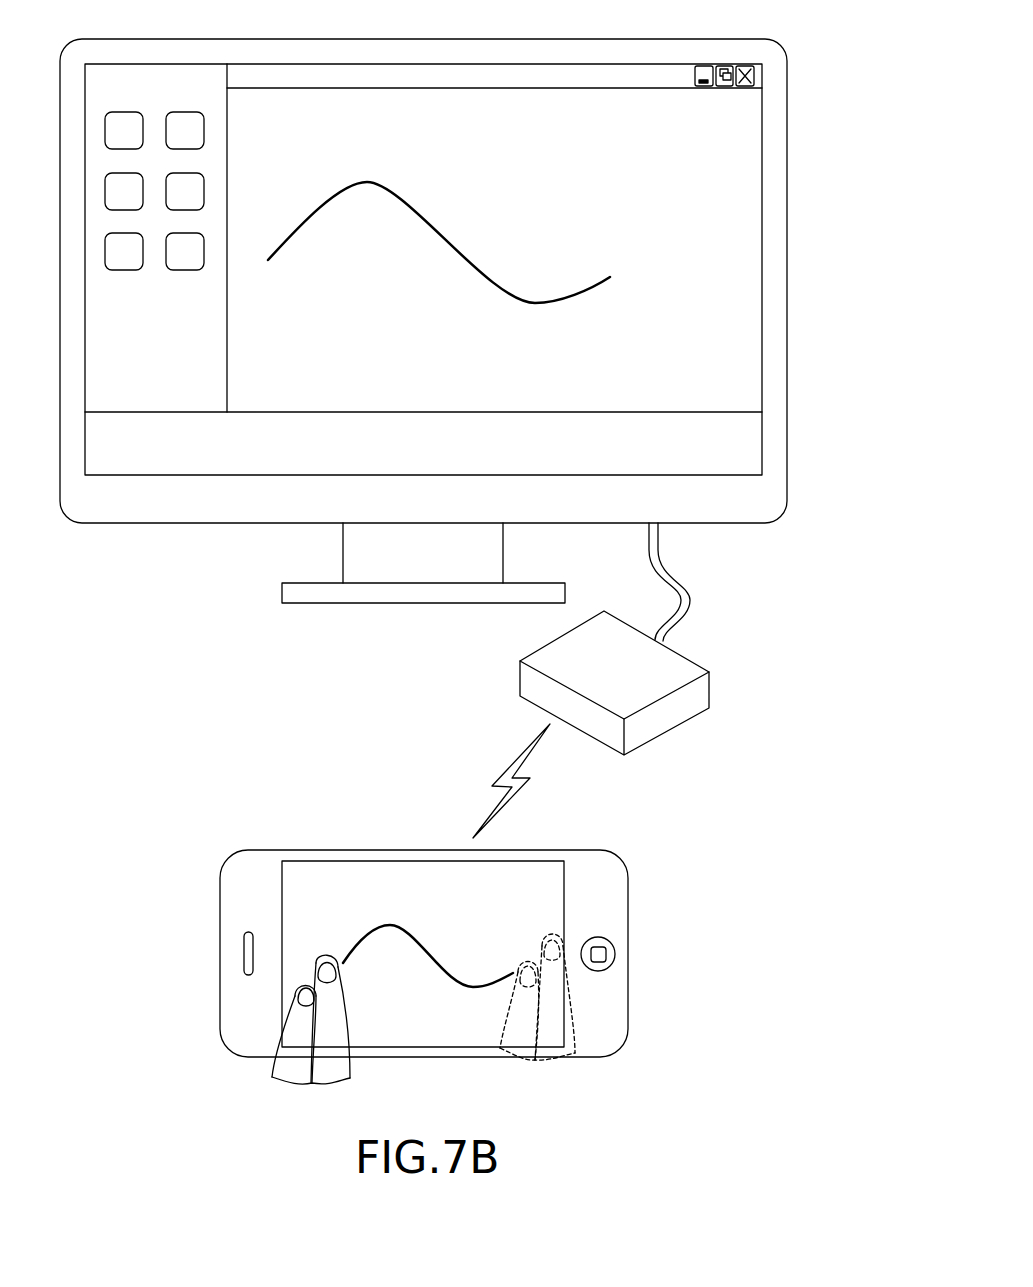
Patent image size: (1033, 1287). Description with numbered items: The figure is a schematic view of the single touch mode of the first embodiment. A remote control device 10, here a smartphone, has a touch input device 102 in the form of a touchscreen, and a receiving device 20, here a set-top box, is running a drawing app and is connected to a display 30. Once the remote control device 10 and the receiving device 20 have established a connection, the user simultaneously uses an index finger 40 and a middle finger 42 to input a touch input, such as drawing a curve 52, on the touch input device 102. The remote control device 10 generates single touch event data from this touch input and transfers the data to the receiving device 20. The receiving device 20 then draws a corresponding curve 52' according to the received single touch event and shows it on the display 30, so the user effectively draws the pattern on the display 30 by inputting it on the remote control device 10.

The display 30 is at (590, 47).
The curve 52' is at (439, 242).
The receiving device 20 is at (563, 648).
The remote control device 10 is at (610, 907).
The touch input device 102 is at (307, 863).
The curve 52 is at (428, 948).
The index finger 40 is at (298, 1030).
The middle finger 42 is at (337, 1007).